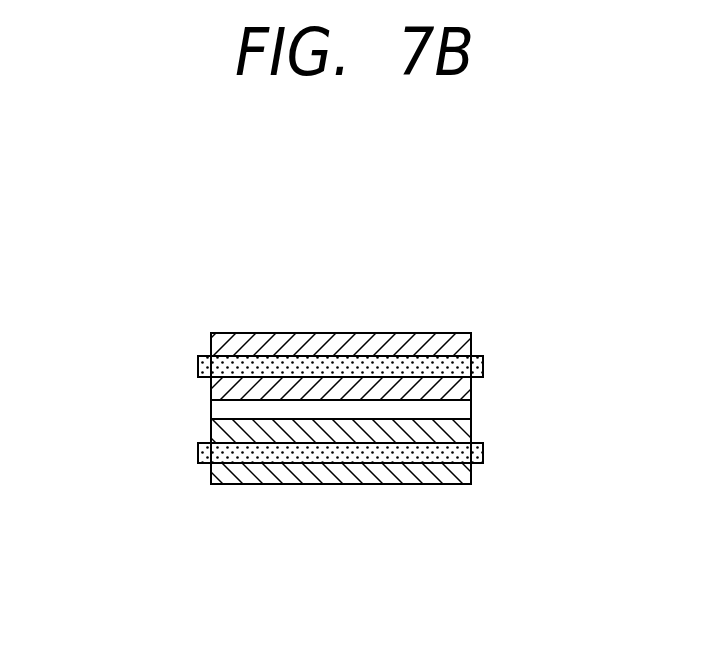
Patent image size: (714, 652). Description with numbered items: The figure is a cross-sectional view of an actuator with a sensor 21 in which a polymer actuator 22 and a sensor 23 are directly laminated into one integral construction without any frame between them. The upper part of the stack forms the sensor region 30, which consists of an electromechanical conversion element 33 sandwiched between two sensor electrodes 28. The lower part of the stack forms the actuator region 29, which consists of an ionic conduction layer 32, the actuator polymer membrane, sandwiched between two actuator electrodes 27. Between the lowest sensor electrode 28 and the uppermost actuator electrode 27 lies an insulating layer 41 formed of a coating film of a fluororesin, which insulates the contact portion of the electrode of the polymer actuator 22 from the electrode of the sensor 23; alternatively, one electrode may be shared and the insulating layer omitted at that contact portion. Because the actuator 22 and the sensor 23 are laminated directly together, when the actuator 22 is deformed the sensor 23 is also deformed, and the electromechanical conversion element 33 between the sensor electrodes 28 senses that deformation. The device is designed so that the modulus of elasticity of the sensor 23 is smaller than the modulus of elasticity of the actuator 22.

The actuator with a sensor 21 is at (204, 198).
The actuator 22 is at (216, 510).
The sensor 23 is at (216, 302).
The actuator electrodes 27 is at (408, 433).
The sensor electrodes 28 is at (408, 387).
The actuator region 29 is at (529, 415).
The sensor region 30 is at (529, 334).
The ionic conduction layer 32 is at (297, 455).
The electromechanical conversion element 33 is at (307, 366).
The insulating layer 41 is at (215, 410).